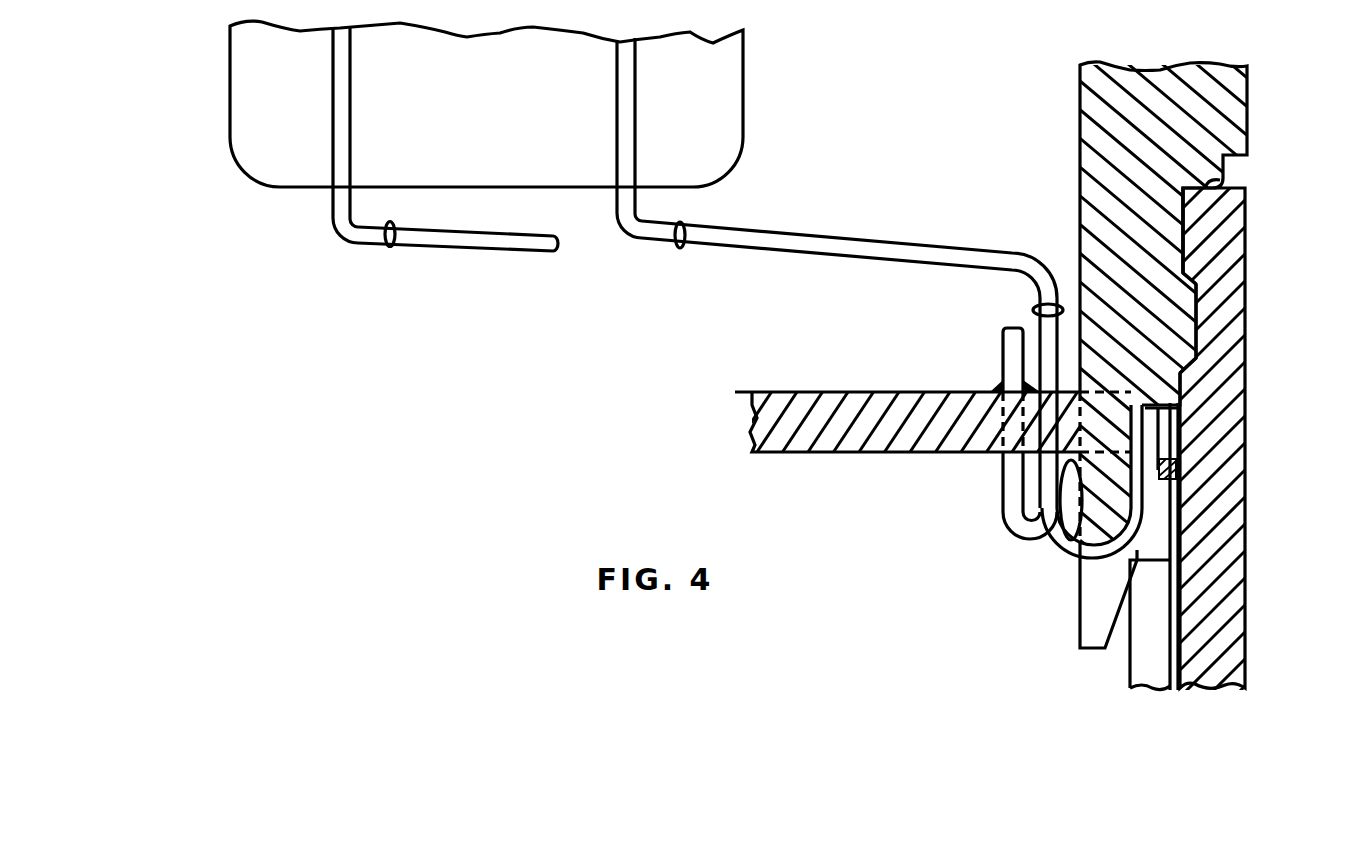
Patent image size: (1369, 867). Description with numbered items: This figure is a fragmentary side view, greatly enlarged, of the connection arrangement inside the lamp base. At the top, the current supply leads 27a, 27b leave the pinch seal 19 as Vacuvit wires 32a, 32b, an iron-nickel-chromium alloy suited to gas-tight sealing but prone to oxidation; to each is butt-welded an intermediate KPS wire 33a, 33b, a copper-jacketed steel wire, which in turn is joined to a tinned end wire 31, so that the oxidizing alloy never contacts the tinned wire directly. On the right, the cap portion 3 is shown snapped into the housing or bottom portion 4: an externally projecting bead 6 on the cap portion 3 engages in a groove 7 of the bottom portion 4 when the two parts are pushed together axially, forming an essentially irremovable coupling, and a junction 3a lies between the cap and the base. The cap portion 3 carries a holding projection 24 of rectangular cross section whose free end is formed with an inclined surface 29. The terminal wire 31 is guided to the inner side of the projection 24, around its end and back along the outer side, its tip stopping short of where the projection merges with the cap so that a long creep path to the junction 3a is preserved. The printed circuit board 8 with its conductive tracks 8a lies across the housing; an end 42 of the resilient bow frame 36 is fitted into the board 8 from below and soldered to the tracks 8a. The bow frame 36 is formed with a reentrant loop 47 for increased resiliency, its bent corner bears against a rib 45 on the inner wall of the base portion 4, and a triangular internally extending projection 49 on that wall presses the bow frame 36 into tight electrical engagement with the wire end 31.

The cap portion 3 is at (1250, 113).
The junction 3a is at (1222, 179).
The housing 4 is at (1247, 512).
The externally projecting bead 6 is at (1184, 331).
The groove 7 is at (1198, 306).
The printed circuit board 8 is at (752, 423).
The conductive tracks 8a is at (840, 392).
The pinch seal 19 is at (230, 137).
The holding projection 24 is at (1062, 537).
The current supply lead 27a is at (412, 272).
The current supply lead 27b is at (822, 272).
The inclined surface 29 is at (1120, 625).
The wire 31 is at (1150, 432).
The Vacuvit wire 32a is at (340, 97).
The Vacuvit wire 32b is at (627, 97).
The KPS intermediate wire 33a is at (487, 243).
The KPS wire 33b is at (957, 250).
The bow frame 36 is at (1170, 470).
The end of bow frame 42 is at (1003, 355).
The rib 45 is at (1147, 652).
The reentrant loop 47 is at (1022, 530).
The internally extending projection 49 is at (1180, 548).